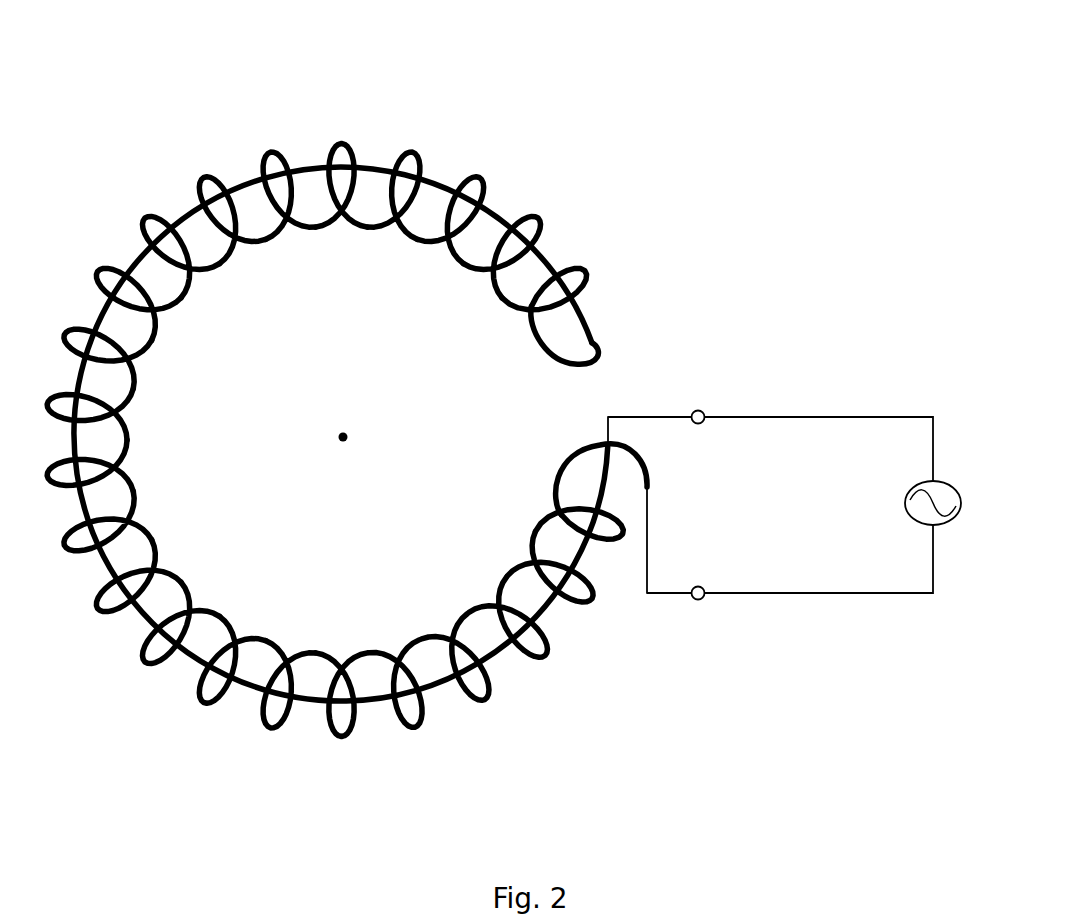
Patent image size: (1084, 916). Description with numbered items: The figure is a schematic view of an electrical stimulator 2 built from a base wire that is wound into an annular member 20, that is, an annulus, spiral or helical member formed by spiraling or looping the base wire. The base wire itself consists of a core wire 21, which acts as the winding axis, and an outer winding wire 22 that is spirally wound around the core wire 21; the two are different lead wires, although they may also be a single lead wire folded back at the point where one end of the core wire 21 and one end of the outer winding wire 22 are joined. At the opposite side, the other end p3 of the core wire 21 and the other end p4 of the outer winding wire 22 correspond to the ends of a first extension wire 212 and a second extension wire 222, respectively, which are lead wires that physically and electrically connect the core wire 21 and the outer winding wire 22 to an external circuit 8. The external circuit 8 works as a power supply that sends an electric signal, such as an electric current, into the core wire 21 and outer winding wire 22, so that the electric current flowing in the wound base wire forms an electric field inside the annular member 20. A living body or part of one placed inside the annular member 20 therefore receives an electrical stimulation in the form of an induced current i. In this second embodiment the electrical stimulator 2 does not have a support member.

The electrical stimulator 2 is at (392, 423).
The annular member 20 is at (332, 574).
The core wire 21 is at (334, 416).
The outer winding wire 22 is at (322, 210).
The first extension wire 212 is at (652, 413).
The second extension wire 222 is at (633, 480).
The other end of the core wire p3 is at (700, 410).
The other end of the outer winding wire p4 is at (698, 600).
The external circuit 8 is at (784, 524).
The radius of the turn r is at (346, 128).
The induced current i is at (355, 437).